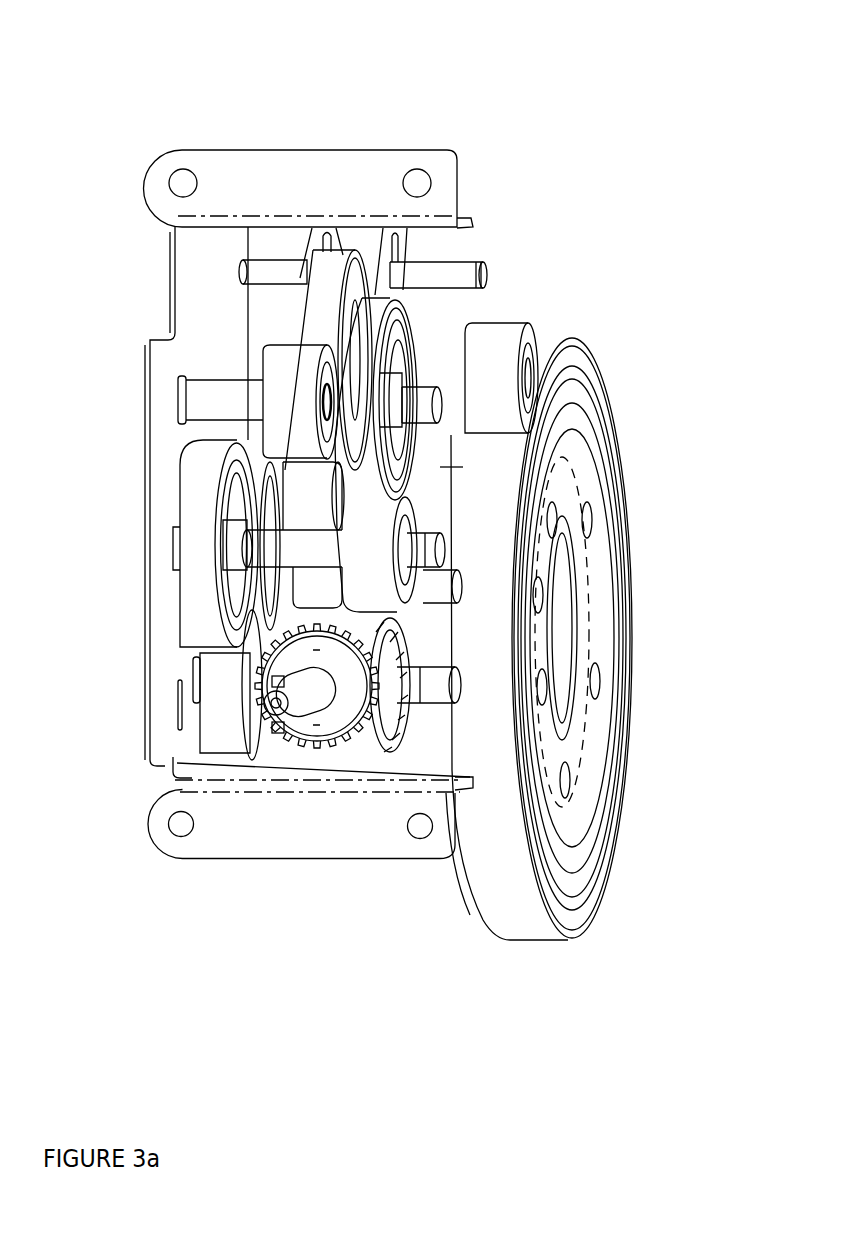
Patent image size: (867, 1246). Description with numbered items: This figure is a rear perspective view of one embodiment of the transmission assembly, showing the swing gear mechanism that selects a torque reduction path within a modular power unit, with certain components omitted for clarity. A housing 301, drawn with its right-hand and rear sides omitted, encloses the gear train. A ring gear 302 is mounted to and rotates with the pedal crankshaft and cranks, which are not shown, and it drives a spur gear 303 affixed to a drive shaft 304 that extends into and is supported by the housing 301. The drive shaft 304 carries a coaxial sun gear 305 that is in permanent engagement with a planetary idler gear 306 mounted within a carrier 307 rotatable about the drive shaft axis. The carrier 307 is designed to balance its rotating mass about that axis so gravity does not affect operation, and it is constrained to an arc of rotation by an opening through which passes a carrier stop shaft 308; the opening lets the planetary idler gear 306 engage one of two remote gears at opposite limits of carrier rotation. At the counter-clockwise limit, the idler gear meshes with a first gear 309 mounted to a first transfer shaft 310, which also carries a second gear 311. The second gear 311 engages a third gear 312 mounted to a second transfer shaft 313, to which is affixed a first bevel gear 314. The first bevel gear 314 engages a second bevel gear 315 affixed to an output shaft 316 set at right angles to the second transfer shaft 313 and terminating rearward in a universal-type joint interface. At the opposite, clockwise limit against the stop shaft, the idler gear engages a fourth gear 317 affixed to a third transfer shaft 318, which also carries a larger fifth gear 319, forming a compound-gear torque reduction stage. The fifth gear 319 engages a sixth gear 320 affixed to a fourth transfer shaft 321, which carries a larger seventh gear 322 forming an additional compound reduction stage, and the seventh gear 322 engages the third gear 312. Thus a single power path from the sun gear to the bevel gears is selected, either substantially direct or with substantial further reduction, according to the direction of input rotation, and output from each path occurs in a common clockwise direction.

The housing 301 is at (332, 140).
The ring gear 302 is at (590, 938).
The spur gear 303 is at (497, 373).
The drive shaft 304 is at (445, 380).
The sun gear 305 is at (318, 307).
The planetary idler gear 306 is at (300, 497).
The carrier 307 is at (413, 229).
The carrier stop shaft 308 is at (503, 264).
The first gear 309 is at (315, 600).
The first transfer shaft 310 is at (443, 590).
The second gear 311 is at (262, 597).
The third gear 312 is at (221, 715).
The second transfer shaft 313 is at (437, 688).
The first bevel gear 314 is at (409, 753).
The second bevel gear 315 is at (333, 722).
The output shaft 316 is at (276, 703).
The fourth gear 317 is at (285, 390).
The third transfer shaft 318 is at (418, 405).
The fifth gear 319 is at (367, 322).
The sixth gear 320 is at (372, 535).
The fourth transfer shaft 321 is at (418, 548).
The seventh gear 322 is at (198, 569).